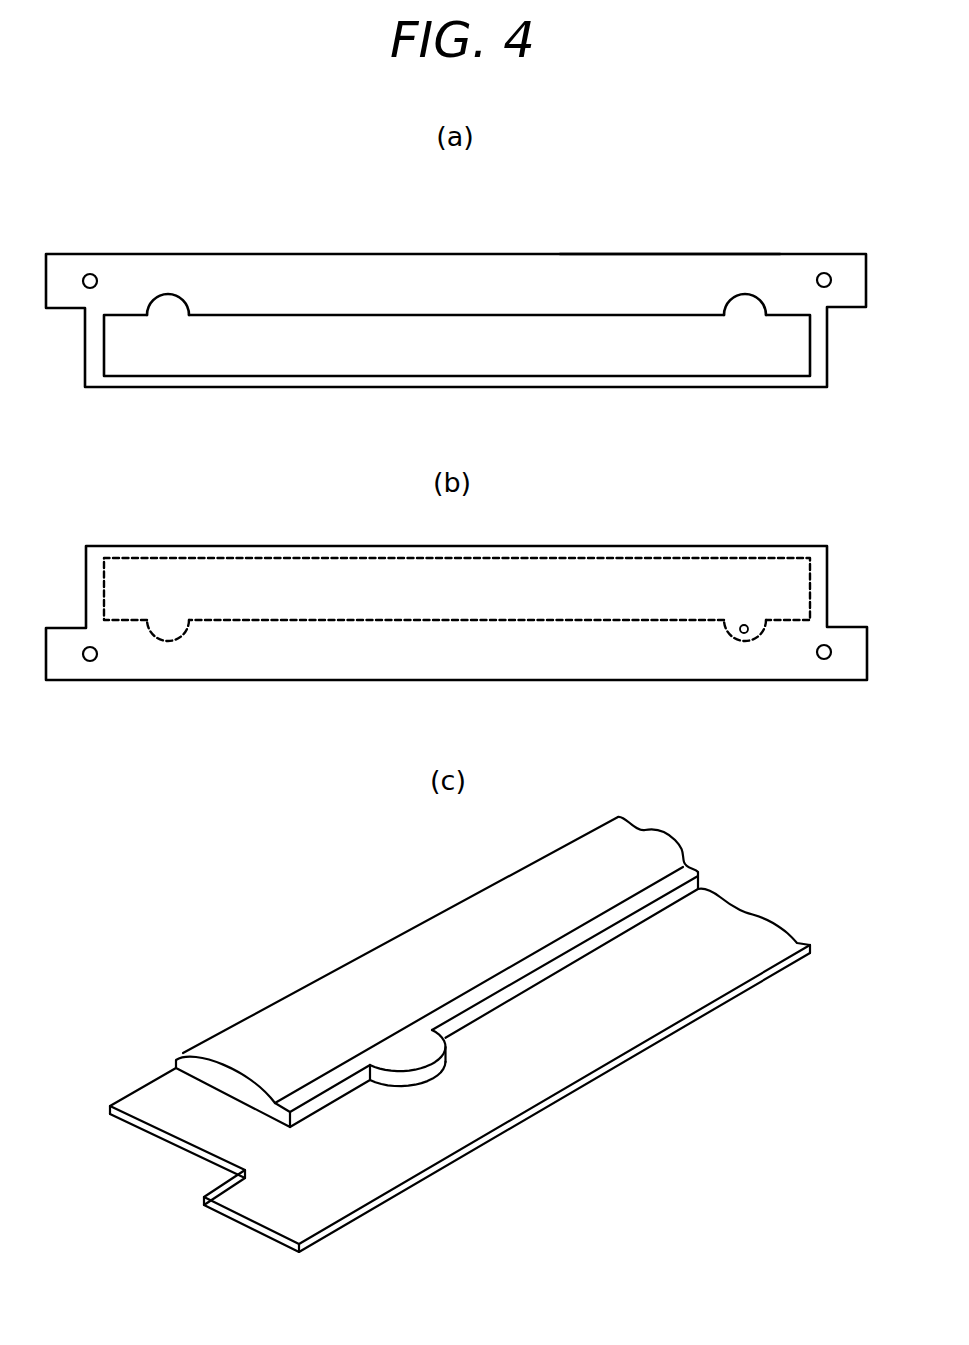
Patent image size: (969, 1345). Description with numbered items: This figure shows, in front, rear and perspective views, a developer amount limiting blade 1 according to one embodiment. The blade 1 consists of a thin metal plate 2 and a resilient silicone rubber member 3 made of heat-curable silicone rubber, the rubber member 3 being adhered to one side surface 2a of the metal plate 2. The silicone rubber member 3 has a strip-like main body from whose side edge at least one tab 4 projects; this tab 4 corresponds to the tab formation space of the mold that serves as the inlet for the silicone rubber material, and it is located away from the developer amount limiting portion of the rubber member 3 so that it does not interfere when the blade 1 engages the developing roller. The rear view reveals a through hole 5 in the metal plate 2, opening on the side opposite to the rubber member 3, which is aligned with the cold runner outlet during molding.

The developer amount limiting blade 1 is at (588, 240).
The metal plate 2 is at (440, 278).
The side surface 2a is at (657, 280).
The silicone rubber member 3 is at (703, 358).
The tab 4 is at (743, 303).
The through hole 5 is at (740, 634).